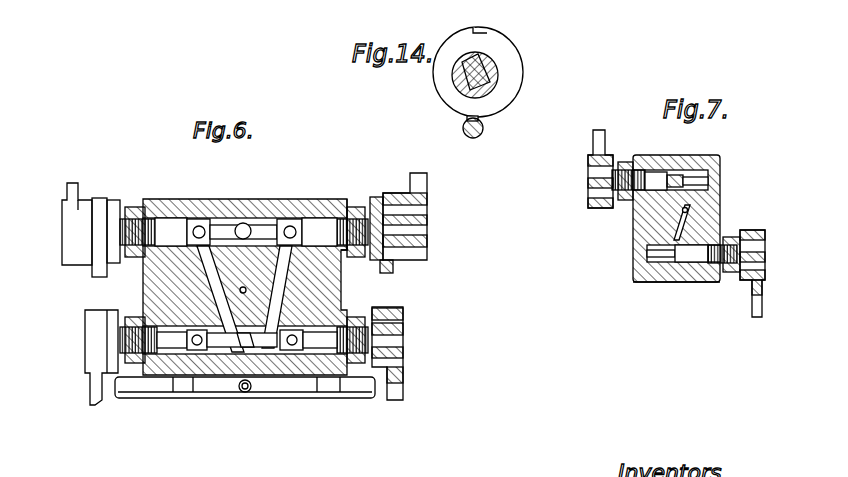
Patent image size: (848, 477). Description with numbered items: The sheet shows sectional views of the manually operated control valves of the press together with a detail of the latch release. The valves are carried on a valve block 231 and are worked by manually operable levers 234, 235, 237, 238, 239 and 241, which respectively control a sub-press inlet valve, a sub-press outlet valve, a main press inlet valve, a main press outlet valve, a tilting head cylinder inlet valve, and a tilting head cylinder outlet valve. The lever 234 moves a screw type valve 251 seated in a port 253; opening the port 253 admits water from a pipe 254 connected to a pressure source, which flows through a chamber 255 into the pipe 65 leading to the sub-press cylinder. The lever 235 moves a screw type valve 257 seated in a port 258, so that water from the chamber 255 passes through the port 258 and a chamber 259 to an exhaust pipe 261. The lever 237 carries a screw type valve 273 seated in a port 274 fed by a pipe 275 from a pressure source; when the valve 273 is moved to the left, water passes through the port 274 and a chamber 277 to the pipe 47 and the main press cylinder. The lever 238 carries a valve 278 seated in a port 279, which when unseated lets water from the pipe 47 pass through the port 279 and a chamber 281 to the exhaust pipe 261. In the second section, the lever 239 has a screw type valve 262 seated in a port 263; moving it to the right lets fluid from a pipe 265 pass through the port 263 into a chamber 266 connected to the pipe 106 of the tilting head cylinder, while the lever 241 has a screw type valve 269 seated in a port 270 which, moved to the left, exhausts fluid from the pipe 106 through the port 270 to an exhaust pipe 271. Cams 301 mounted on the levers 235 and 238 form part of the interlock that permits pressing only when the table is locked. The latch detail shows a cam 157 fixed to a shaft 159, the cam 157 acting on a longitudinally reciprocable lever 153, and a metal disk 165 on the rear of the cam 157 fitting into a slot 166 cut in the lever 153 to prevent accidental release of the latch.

In FIG. 6, the pipe 47 is at (215, 218).
In FIG. 6, the pipe 65 is at (343, 213).
In FIG. 7, the pipe 106 is at (688, 207).
In FIG. 14, the longitudinally reciprocable lever 153 is at (468, 136).
In FIG. 14, the cam 157 is at (452, 70).
In FIG. 14, the shaft 159 is at (453, 85).
In FIG. 14, the metal disk 165 is at (513, 62).
In FIG. 14, the slot 166 is at (467, 120).
In FIG. 6, the valve block 231 is at (350, 205).
In FIG. 6, the lever 234 is at (402, 392).
In FIG. 6, the lever 235 is at (427, 183).
In FIG. 6, the lever 237 is at (90, 393).
In FIG. 6, the lever 238 is at (68, 190).
In FIG. 7, the lever 239 is at (762, 297).
In FIG. 7, the lever 241 is at (597, 140).
In FIG. 6, the screw type valve 251 is at (272, 347).
In FIG. 6, the port 253 is at (254, 346).
In FIG. 6, the pipe 254 is at (283, 350).
In FIG. 6, the chamber 255 is at (342, 291).
In FIG. 6, the screw type valve 257 is at (335, 218).
In FIG. 6, the port 258 is at (290, 226).
In FIG. 6, the chamber 259 is at (283, 226).
In FIG. 6, the exhaust pipe 261 is at (263, 222).
In FIG. 7, the screw type valve 262 is at (756, 248).
In FIG. 7, the port 263 is at (661, 282).
In FIG. 7, the pipe 265 is at (700, 238).
In FIG. 7, the chamber 266 is at (675, 223).
In FIG. 7, the screw type valve 269 is at (653, 173).
In FIG. 7, the port 270 is at (683, 174).
In FIG. 7, the exhaust pipe 271 is at (675, 155).
In FIG. 6, the screw type valve 273 is at (203, 350).
In FIG. 6, the port 274 is at (220, 346).
In FIG. 6, the pipe 275 is at (186, 348).
In FIG. 6, the chamber 277 is at (213, 280).
In FIG. 6, the valve 278 is at (172, 222).
In FIG. 6, the port 279 is at (240, 226).
In FIG. 6, the chamber 281 is at (247, 224).
In FIG. 6, the cam 301 is at (100, 200).